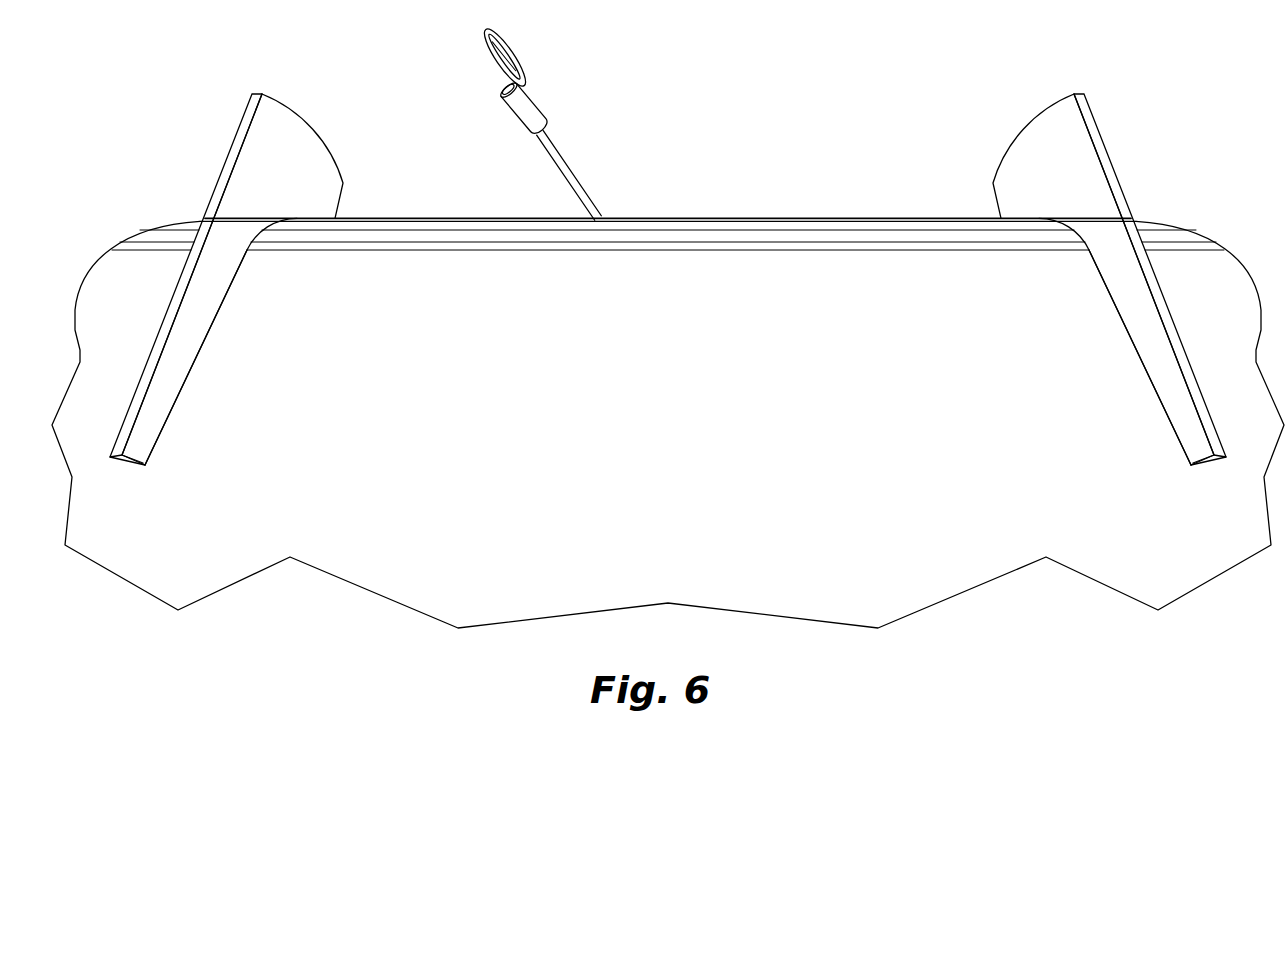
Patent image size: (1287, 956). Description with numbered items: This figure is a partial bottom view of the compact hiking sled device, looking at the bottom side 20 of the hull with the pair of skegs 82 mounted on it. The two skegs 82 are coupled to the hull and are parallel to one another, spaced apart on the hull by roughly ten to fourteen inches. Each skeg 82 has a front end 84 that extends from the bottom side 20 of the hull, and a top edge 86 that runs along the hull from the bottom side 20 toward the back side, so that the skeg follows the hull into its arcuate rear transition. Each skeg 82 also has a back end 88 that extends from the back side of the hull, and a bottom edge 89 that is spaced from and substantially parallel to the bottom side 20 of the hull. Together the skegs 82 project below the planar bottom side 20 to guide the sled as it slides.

The bottom side 20 is at (640, 302).
The skeg 82 is at (205, 285).
The front end 84 is at (125, 462).
The top edge 86 is at (197, 357).
The back end 88 is at (321, 147).
The bottom edge 89 is at (227, 178).